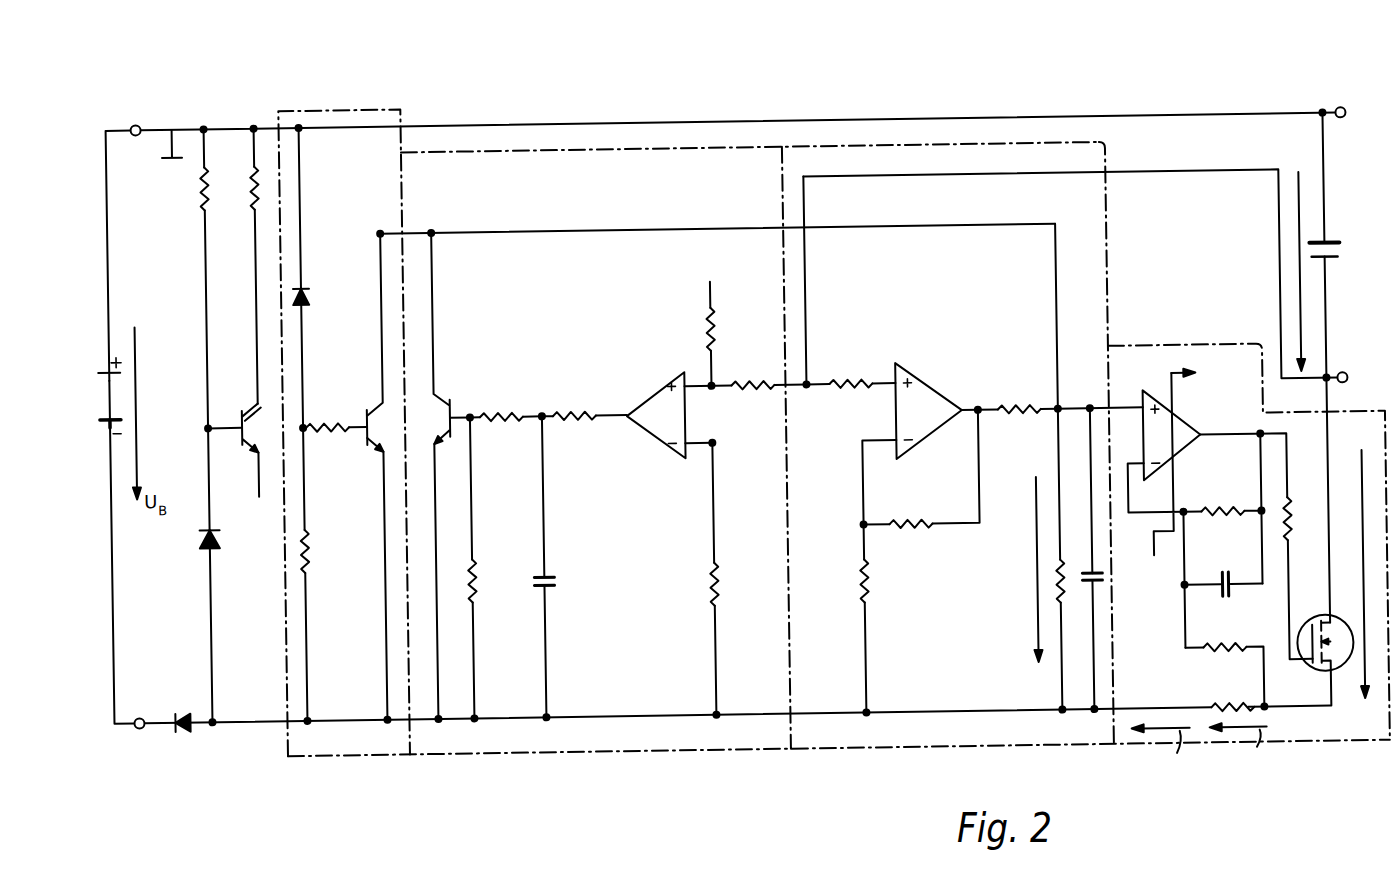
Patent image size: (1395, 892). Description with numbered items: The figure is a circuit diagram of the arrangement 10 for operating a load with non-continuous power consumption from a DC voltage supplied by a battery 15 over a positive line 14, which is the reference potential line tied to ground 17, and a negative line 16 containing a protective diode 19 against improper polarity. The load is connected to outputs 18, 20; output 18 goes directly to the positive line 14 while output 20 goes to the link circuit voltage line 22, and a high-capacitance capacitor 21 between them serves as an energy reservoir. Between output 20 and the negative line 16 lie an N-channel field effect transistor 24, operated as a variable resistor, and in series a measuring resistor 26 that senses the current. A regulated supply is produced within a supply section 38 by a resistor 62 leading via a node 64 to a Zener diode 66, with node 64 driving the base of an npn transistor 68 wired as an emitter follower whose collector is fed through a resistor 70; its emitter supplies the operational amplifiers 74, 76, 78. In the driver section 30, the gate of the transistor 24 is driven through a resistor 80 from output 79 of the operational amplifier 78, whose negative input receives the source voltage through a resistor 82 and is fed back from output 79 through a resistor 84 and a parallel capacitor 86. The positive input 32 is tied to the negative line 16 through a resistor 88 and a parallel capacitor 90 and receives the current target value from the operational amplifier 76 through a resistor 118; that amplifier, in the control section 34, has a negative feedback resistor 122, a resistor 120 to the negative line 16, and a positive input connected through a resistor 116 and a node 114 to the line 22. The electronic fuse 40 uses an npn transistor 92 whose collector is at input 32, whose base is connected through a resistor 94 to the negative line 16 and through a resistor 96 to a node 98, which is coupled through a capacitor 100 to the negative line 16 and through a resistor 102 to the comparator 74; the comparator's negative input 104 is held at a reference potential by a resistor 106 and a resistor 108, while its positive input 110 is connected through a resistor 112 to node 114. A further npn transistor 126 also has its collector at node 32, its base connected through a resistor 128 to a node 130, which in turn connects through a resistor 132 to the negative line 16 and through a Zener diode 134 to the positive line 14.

The arrangement 10 is at (745, 54).
The positive line 14 is at (762, 122).
The battery 15 is at (99, 395).
The negative line 16 is at (1199, 373).
The ground 17 is at (170, 150).
The output 18 is at (1345, 117).
The protective diode 19 is at (183, 725).
The output 20 is at (1343, 382).
The high-capacitance capacitor 21 is at (1330, 252).
The link circuit voltage line 22 is at (1130, 178).
The N-channel field effect transistor 24 is at (1342, 680).
The measuring resistor 26 is at (1207, 710).
The driver circuit 30 is at (1200, 352).
The positive input 32 is at (1060, 412).
The control circuit 34 is at (1035, 148).
The voltage supply unit 38 is at (337, 105).
The electronic fuse 40 is at (636, 148).
The resistor 62 is at (204, 190).
The node 64 is at (206, 421).
The Zener diode 66 is at (200, 532).
The npn transistor 68 is at (244, 404).
The resistor 70 is at (254, 190).
The operational amplifier 74 is at (650, 440).
The operational amplifier 76 is at (945, 392).
The operational amplifier 78 is at (1185, 450).
The output 79 is at (1235, 442).
The resistor 80 is at (1290, 530).
The resistor 82 is at (1225, 650).
The resistor 84 is at (1218, 525).
The capacitor 86 is at (1225, 585).
The resistor 88 is at (1062, 580).
The capacitor 90 is at (1090, 600).
The npn transistor 92 is at (450, 396).
The resistor 94 is at (472, 580).
The resistor 96 is at (503, 410).
The node 98 is at (568, 410).
The capacitor 100 is at (552, 582).
The resistor 102 is at (598, 412).
The negative input 104 is at (715, 447).
The resistor 106 is at (718, 580).
The resistor 108 is at (716, 330).
The positive input 110 is at (700, 386).
The resistor 112 is at (752, 390).
The node 114 is at (807, 390).
The resistor 116 is at (853, 386).
The resistor 118 is at (1020, 413).
The resistor 120 is at (866, 585).
The negative feedback resistor 122 is at (910, 527).
The npn transistor 126 is at (365, 405).
The resistor 128 is at (378, 450).
The node 130 is at (312, 425).
The resistor 132 is at (307, 545).
The Zener diode 134 is at (310, 291).